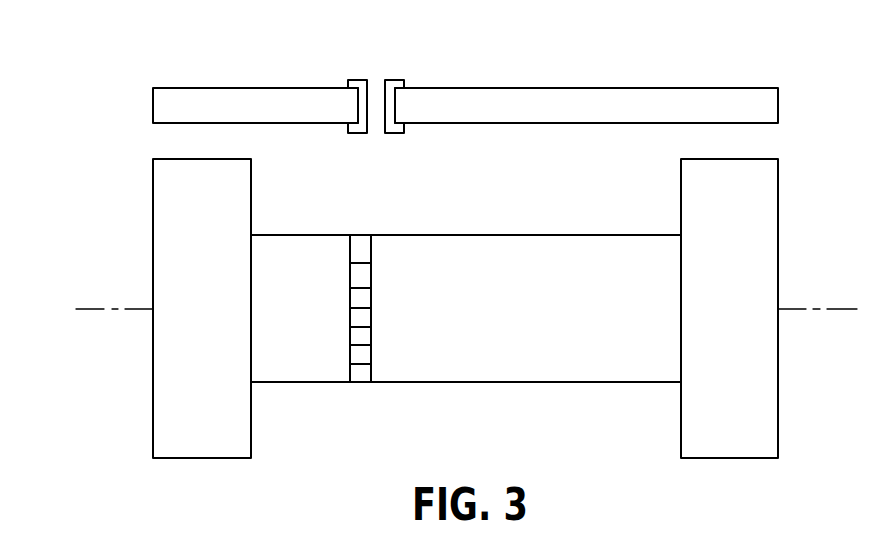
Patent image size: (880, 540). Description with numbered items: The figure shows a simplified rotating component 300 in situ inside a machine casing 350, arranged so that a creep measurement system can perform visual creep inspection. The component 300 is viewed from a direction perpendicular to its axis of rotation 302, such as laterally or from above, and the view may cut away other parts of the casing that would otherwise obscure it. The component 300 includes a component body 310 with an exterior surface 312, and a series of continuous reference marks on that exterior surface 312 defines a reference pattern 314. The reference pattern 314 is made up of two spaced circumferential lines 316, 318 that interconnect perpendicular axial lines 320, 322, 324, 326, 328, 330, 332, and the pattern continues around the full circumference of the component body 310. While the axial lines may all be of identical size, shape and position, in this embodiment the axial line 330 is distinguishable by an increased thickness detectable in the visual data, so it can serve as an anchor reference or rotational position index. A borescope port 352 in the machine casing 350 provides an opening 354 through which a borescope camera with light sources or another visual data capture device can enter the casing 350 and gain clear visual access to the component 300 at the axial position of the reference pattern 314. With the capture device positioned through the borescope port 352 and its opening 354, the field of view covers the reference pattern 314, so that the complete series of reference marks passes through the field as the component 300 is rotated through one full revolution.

The component 300 is at (437, 308).
The axis of rotation 302 is at (93, 311).
The component body 310 is at (466, 334).
The exterior surface 312 is at (486, 355).
The reference pattern 314 is at (366, 273).
The circumferential line 316 is at (350, 234).
The circumferential line 318 is at (372, 236).
The axial line 320 is at (372, 361).
The axial line 322 is at (350, 344).
The axial line 324 is at (372, 324).
The axial line 326 is at (350, 308).
The axial line 328 is at (372, 284).
The axial line 330 is at (350, 263).
The axial line 332 is at (372, 237).
The machine casing 350 is at (153, 96).
The borescope port 352 is at (360, 79).
The second sleeve flange 354 is at (373, 85).